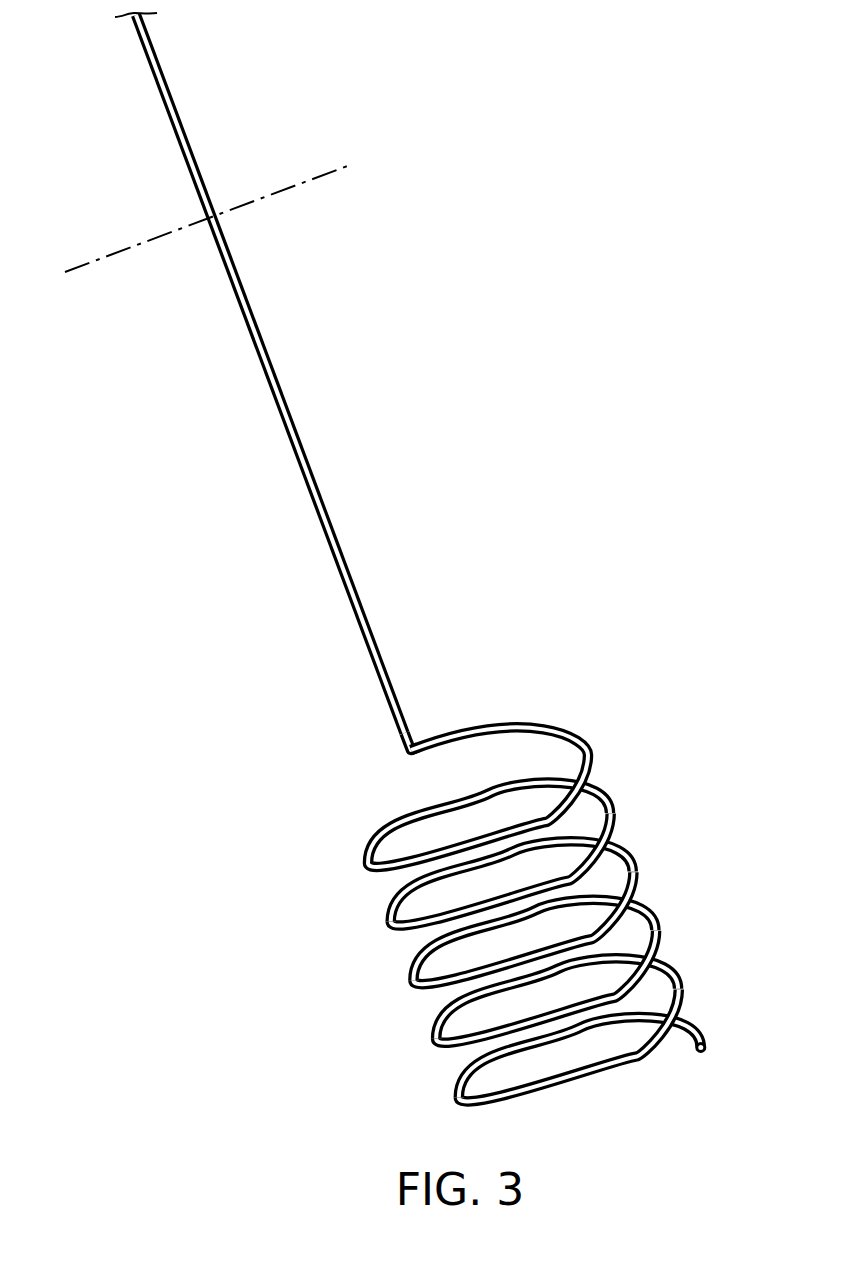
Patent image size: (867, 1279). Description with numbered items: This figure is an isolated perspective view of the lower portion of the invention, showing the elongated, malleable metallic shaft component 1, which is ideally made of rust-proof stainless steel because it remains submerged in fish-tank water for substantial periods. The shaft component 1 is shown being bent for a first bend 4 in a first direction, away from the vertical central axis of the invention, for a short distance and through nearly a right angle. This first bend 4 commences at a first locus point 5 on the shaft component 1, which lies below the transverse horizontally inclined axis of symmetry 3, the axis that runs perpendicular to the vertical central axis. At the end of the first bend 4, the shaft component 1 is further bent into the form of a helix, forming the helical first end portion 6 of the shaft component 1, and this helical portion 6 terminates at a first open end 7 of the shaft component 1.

The shaft component 1 is at (243, 285).
The transverse horizontally inclined axis of symmetry 3 is at (207, 218).
The first bend 4 is at (489, 723).
The first locus point 5 is at (413, 757).
The helical first end portion 6 is at (638, 866).
The first open end 7 is at (705, 1041).